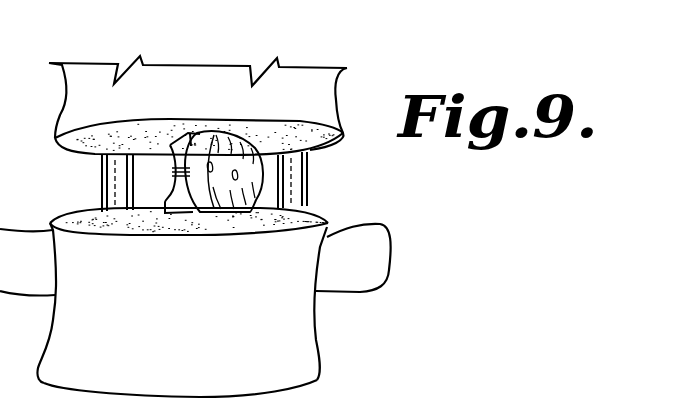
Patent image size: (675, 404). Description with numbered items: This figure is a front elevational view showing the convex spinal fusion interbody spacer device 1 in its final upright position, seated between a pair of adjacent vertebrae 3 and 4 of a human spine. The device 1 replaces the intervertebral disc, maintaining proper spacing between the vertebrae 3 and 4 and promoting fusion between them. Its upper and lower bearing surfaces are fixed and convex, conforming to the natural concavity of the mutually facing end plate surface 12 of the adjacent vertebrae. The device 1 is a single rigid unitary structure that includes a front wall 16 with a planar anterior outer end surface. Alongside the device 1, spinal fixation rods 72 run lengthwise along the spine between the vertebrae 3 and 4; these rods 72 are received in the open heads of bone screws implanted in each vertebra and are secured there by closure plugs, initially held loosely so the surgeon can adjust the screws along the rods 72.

The convex spinal fusion interbody spacer device 1 is at (187, 153).
The vertebra 3 is at (320, 68).
The vertebra 4 is at (315, 340).
The end plate surface 12 is at (132, 217).
The front wall 16 is at (189, 202).
The spinal fixation rod 72 is at (101, 184).